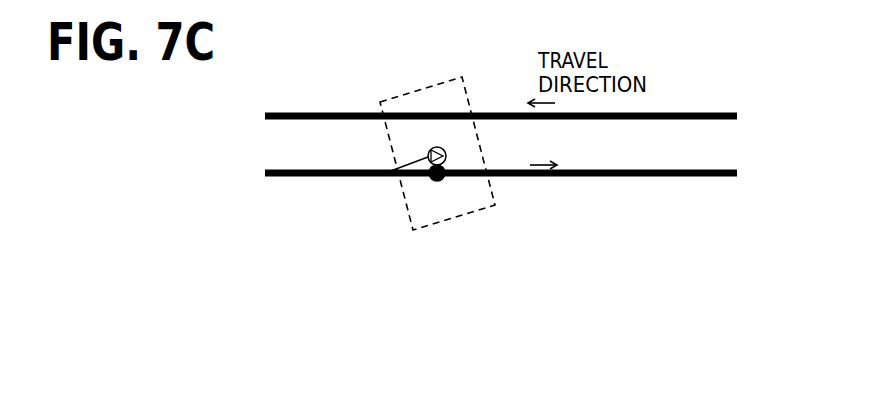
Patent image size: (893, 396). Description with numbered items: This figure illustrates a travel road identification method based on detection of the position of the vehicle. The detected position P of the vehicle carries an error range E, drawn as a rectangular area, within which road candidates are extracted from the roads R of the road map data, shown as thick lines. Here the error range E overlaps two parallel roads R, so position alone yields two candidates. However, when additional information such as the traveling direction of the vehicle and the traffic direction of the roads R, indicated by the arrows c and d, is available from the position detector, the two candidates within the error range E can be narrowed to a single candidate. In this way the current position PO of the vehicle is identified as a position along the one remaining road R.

The error range E is at (412, 92).
The roads R is at (686, 112).
The position of the vehicle P is at (384, 176).
The current position PO is at (442, 182).
The arrow indicating traffic direction d is at (530, 101).
The arrow indicating traffic direction c is at (551, 158).